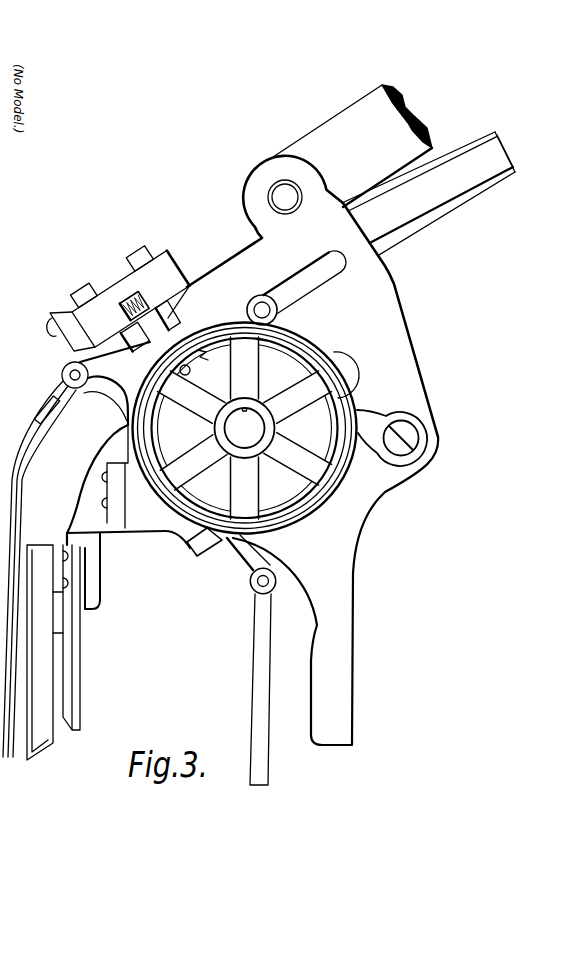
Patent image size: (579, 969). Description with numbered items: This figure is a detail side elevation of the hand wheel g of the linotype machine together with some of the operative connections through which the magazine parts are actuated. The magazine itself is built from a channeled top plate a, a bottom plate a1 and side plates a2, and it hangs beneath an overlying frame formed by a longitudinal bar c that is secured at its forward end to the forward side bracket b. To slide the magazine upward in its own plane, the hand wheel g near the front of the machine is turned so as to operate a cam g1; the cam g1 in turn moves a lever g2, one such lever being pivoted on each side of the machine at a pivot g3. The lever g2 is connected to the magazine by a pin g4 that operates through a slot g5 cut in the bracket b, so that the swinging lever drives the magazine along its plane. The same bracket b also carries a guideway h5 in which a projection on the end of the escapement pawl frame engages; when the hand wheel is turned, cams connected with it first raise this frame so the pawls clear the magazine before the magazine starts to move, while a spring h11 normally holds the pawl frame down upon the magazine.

The plate a is at (438, 186).
The bottom plate a1 is at (500, 182).
The side plates a2 is at (497, 161).
The forward side bracket b is at (397, 335).
The longitudinal bar c is at (331, 120).
The hand wheel g is at (316, 348).
The cam g1 is at (205, 497).
The lever g2 is at (365, 403).
The lever pivot g3 is at (403, 436).
The pin g4 is at (260, 310).
The slot g5 is at (322, 277).
The spring h11 is at (122, 300).
The guideway h5 is at (165, 318).